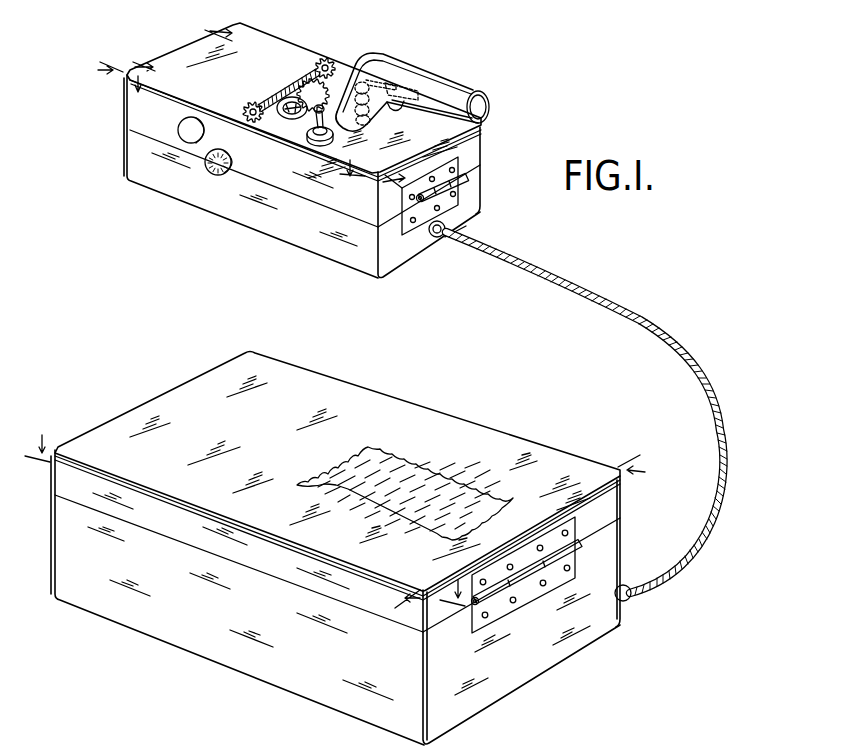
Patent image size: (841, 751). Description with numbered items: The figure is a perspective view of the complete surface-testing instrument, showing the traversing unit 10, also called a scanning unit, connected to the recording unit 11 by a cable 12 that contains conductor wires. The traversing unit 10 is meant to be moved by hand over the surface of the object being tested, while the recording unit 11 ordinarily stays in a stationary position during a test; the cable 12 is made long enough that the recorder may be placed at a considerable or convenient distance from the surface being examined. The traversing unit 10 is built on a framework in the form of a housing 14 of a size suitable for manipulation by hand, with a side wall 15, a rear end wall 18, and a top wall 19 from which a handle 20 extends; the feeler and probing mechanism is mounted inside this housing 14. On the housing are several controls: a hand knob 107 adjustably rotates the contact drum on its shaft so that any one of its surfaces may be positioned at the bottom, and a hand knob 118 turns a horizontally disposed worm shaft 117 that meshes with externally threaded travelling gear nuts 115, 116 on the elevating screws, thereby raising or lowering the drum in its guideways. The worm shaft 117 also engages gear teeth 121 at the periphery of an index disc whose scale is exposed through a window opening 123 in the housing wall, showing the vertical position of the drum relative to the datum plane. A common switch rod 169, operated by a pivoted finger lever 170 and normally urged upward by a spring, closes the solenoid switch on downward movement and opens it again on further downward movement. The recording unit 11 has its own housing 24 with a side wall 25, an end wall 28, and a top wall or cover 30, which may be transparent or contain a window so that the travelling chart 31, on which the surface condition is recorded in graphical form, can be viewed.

The traversing unit 10 is at (231, 237).
The recording unit 11 is at (218, 677).
The cable 12 is at (656, 313).
The housing 14 is at (156, 188).
The side wall 15 is at (292, 238).
The rear end wall 18 is at (475, 148).
The top wall 19 is at (283, 44).
The handle 20 is at (441, 74).
The housing 24 is at (184, 636).
The side wall 25 is at (292, 684).
The end wall 28 is at (553, 660).
The top wall or cover 30 is at (497, 438).
The travelling chart 31 is at (418, 470).
The hand knob 107 is at (214, 175).
The gear nut 115 is at (253, 122).
The gear nut 116 is at (316, 64).
The worm shaft 117 is at (263, 92).
The hand knob 118 is at (192, 118).
The gear teeth 121 is at (290, 118).
The window opening 123 is at (298, 120).
The switch rod 169 is at (357, 82).
The finger lever 170 is at (396, 103).